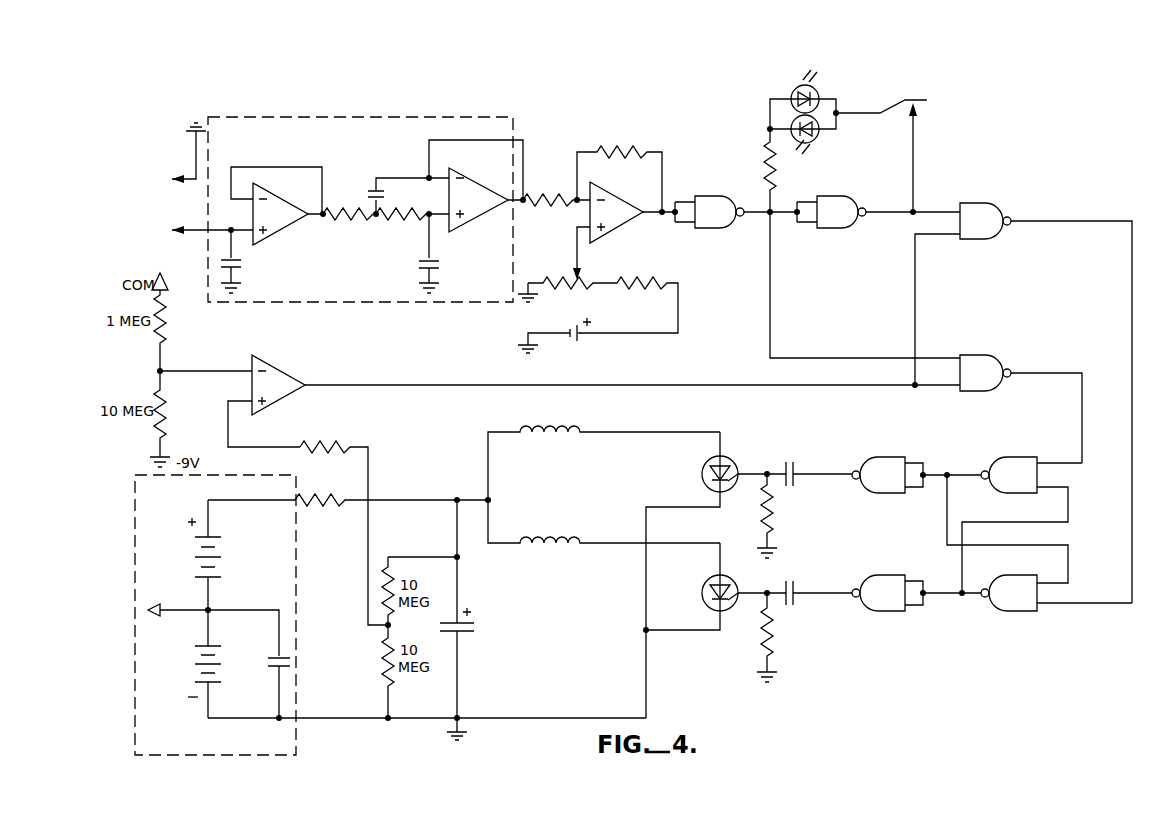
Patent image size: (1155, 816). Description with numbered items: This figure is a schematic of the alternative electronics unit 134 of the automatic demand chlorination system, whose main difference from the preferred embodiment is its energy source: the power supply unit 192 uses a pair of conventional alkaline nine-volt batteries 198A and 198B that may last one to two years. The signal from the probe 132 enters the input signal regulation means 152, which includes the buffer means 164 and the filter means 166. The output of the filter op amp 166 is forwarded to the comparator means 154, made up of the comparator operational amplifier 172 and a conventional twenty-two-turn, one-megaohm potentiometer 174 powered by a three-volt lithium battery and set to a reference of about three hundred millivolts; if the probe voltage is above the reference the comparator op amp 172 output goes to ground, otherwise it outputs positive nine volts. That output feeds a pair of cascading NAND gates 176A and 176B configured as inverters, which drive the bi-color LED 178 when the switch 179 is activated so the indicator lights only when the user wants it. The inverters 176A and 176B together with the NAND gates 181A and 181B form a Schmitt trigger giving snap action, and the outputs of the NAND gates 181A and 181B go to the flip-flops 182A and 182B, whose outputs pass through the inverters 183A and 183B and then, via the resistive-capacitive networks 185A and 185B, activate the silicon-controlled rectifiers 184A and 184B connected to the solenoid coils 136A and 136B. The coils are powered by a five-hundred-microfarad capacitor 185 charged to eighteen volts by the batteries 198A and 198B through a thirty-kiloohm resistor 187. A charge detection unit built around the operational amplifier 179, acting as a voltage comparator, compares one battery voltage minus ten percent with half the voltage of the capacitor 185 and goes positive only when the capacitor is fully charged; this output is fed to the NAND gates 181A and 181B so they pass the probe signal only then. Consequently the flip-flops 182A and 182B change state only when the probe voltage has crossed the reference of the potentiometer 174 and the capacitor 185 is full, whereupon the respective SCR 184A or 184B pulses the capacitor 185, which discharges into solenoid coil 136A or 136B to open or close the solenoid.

The electronics unit 134 is at (128, 115).
The probe 132 is at (180, 178).
The input signal regulation means 152 is at (354, 117).
The buffer means 164 is at (282, 224).
The filter means 166 is at (468, 177).
The comparator means 154 is at (676, 162).
The comparator operational amplifier 172 is at (627, 223).
The potentiometer 174 is at (564, 277).
The NAND gate 176A is at (720, 196).
The NAND gate 176B is at (844, 196).
The bi-color LED 178 is at (843, 55).
The switch; operational amplifier 179 is at (914, 98).
The NAND gate 181A is at (984, 239).
The NAND gate 181B is at (983, 355).
The flip-flop 182A is at (1023, 456).
The flip-flop 182B is at (1025, 613).
The inverter 183A is at (893, 456).
The inverter 183B is at (880, 613).
The silicon-controlled rectifier 184A is at (732, 460).
The silicon-controlled rectifier 184B is at (727, 612).
The resistive-capacitive network 185A is at (807, 493).
The resistive-capacitive network 185B is at (813, 641).
The capacitor 185 is at (466, 634).
The solenoid coil 136A is at (548, 427).
The solenoid coil 136B is at (548, 537).
The resistor 187 is at (313, 507).
The power supply unit 192 is at (112, 563).
The battery 198A is at (220, 563).
The battery 198B is at (219, 652).